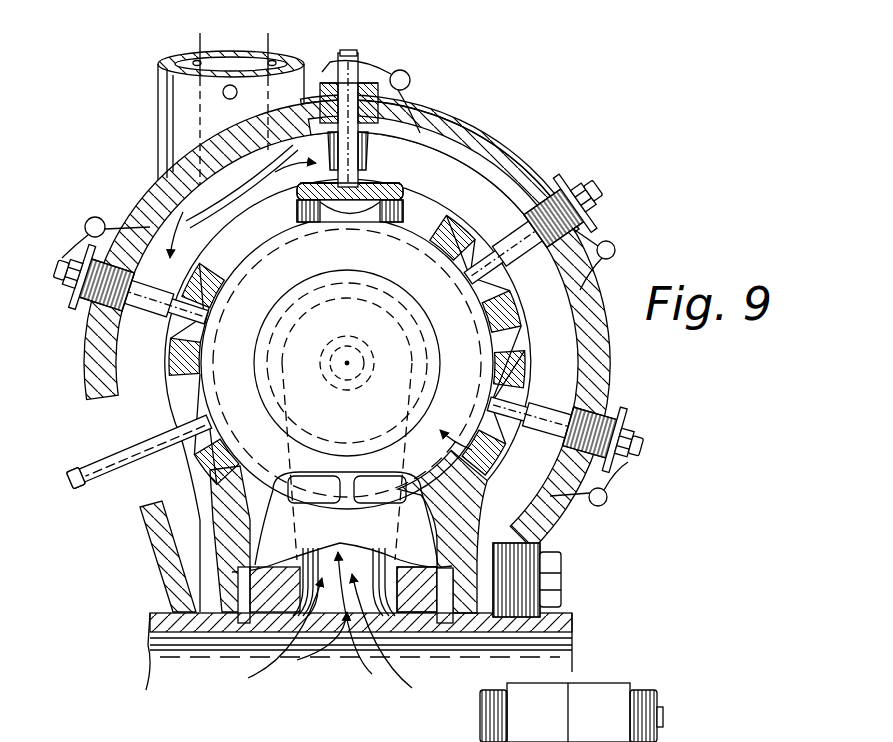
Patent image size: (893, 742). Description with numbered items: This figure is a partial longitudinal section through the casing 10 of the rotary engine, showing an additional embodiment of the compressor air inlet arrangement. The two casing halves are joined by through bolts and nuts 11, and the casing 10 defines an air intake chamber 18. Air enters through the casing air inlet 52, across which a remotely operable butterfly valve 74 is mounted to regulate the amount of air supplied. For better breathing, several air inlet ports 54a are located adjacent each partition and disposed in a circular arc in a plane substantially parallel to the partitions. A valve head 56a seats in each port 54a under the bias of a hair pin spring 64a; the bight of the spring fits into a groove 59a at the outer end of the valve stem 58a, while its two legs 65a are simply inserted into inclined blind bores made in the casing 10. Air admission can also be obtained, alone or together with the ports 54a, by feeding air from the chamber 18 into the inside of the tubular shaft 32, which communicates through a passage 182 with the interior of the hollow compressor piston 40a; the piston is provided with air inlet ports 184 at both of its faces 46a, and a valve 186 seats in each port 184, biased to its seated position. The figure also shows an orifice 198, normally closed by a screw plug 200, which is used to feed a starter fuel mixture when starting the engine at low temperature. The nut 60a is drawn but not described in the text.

The casing 10 is at (513, 152).
The through bolts and nuts 11 is at (662, 712).
The air intake chamber 18 is at (488, 166).
The tubular shaft 32 is at (150, 613).
The hollow compressor piston 40a is at (548, 508).
The faces of piston 46a is at (467, 350).
The casing air inlet 52 is at (284, 58).
The air inlet ports 54a is at (390, 226).
The valve head 56a is at (387, 182).
The valve stem 58a is at (355, 127).
The groove 59a is at (68, 486).
The nut 60a is at (378, 118).
The hair pin spring 64a is at (400, 70).
The legs of hair pin spring 65a is at (600, 283).
The butterfly valve 74 is at (231, 62).
The passage 182 is at (350, 626).
The air inlet ports 184 is at (217, 517).
The valve 186 is at (262, 373).
The orifice 198 is at (520, 553).
The screw plug 200 is at (556, 592).